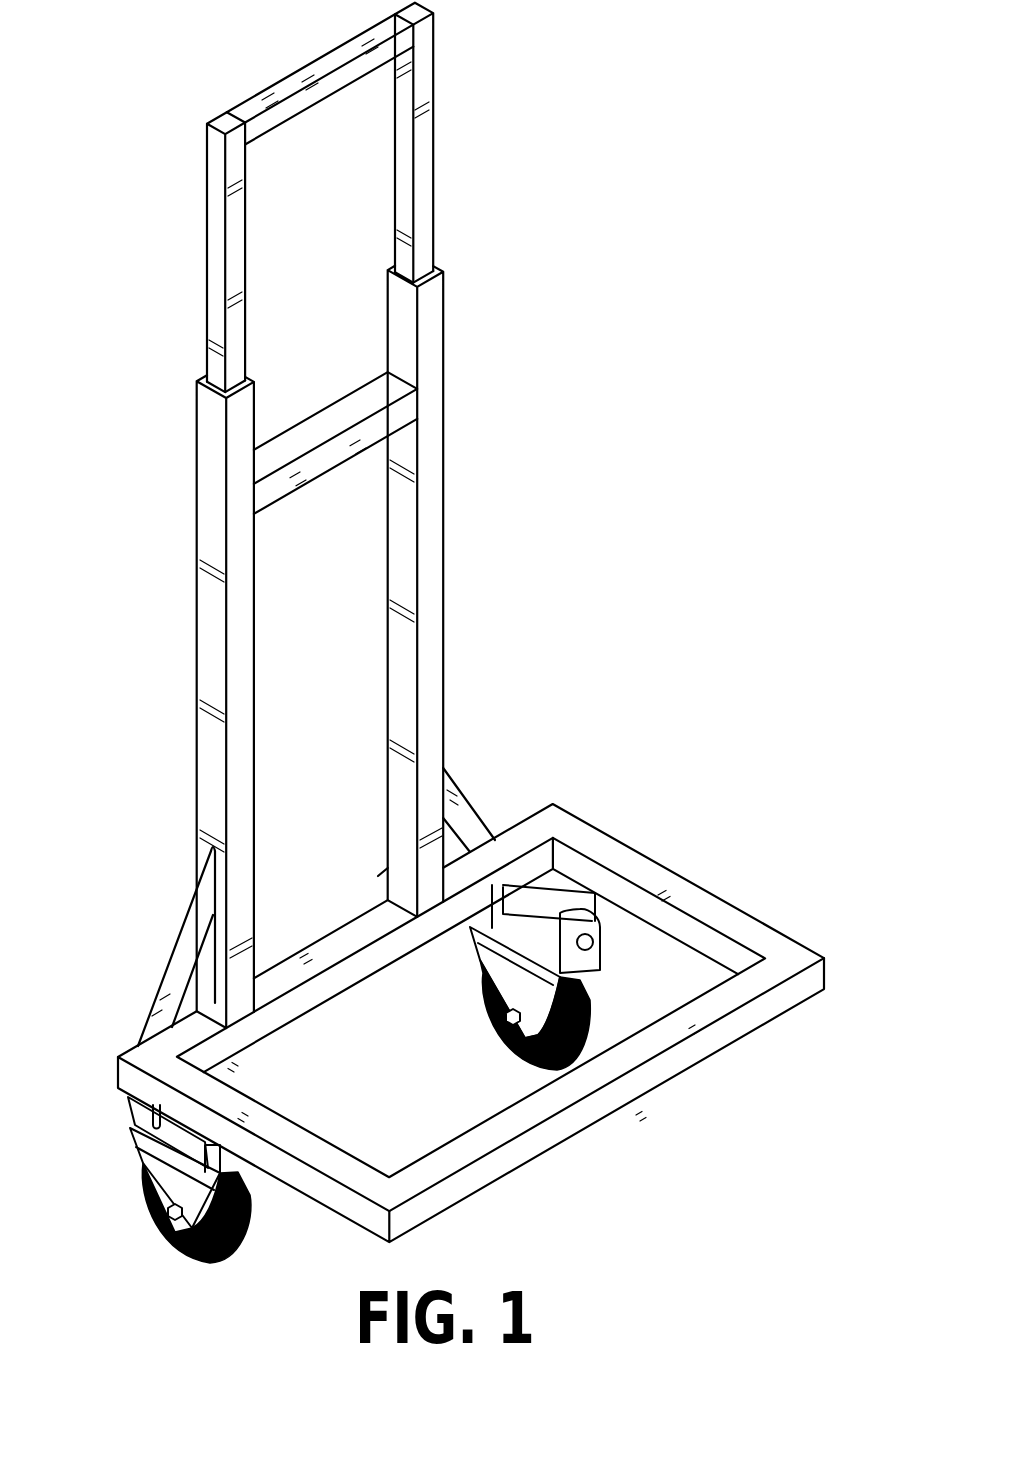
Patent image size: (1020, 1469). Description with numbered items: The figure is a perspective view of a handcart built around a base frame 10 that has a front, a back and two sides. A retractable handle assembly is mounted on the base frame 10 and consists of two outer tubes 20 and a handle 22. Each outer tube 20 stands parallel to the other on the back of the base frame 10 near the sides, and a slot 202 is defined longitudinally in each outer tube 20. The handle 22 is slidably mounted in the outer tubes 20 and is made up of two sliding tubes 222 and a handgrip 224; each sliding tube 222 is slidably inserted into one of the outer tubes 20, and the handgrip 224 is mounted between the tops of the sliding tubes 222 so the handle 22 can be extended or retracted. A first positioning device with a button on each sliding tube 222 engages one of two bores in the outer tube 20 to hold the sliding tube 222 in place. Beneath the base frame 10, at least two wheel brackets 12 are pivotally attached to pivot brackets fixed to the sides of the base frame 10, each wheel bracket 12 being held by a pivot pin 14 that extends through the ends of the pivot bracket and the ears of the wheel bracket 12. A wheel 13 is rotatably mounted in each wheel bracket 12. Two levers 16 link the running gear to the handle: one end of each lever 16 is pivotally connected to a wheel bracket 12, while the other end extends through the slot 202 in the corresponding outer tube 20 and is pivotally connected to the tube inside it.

The base frame 10 is at (633, 860).
The wheel bracket 12 is at (191, 1180).
The wheel 13 is at (247, 1228).
The pivot pin 14 is at (532, 913).
The lever 16 is at (182, 968).
The outer tube 20 is at (314, 647).
The slot 202 is at (215, 928).
The handle 22 is at (280, 196).
The sliding tube 222 is at (240, 284).
The handgrip 224 is at (280, 90).